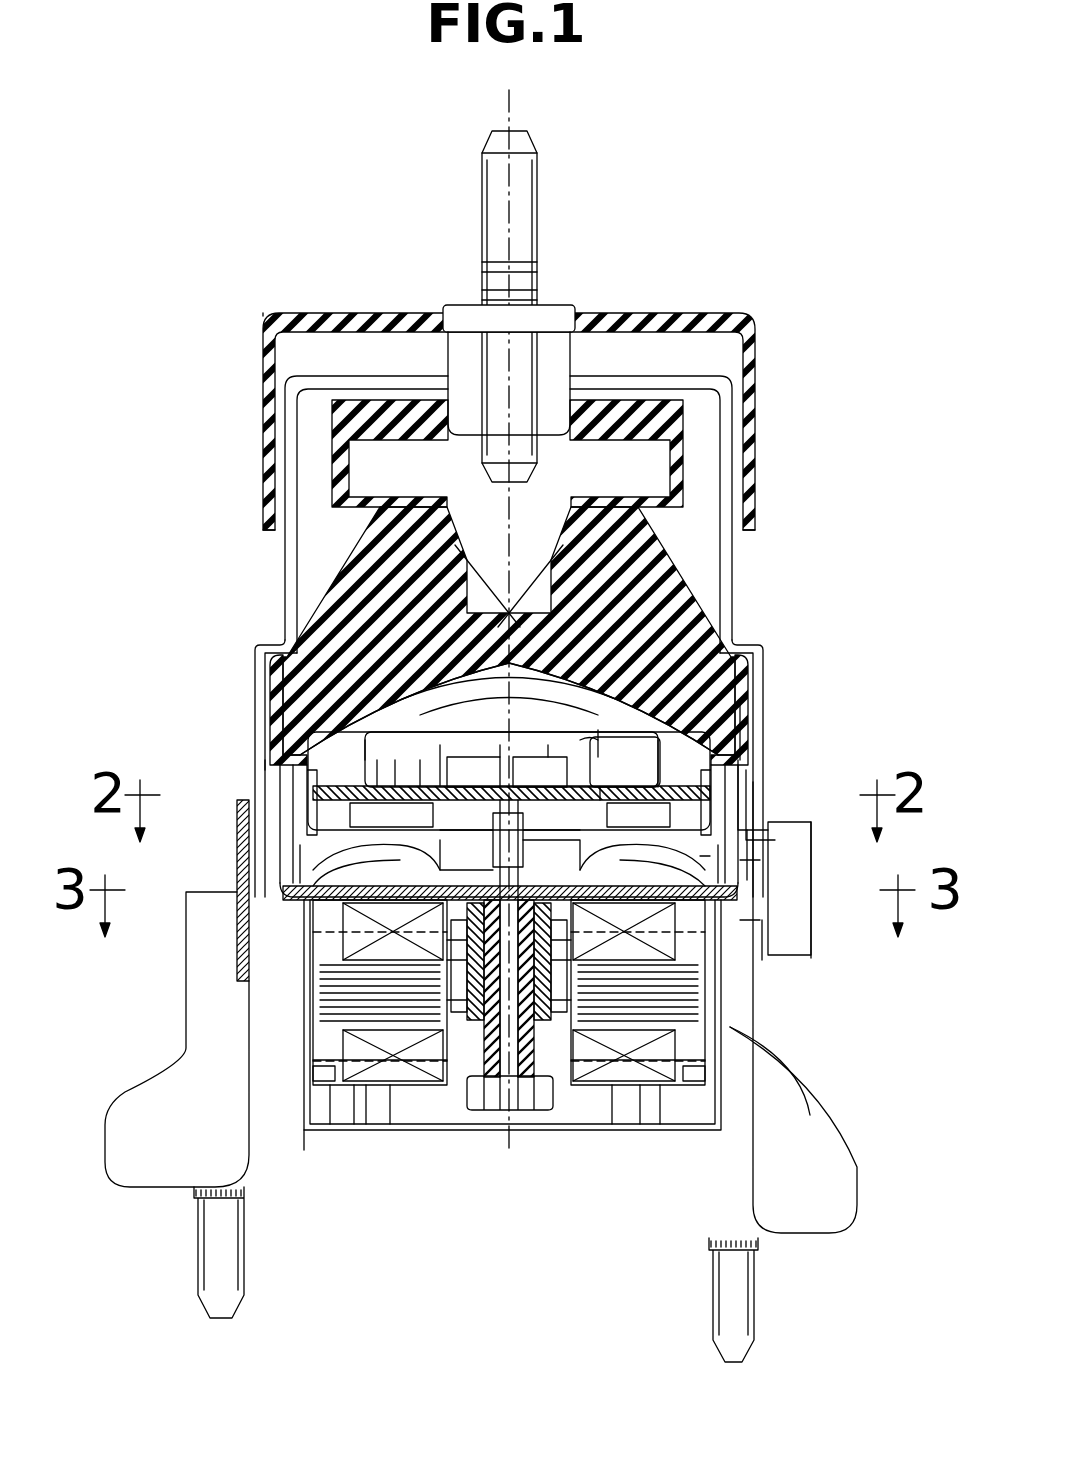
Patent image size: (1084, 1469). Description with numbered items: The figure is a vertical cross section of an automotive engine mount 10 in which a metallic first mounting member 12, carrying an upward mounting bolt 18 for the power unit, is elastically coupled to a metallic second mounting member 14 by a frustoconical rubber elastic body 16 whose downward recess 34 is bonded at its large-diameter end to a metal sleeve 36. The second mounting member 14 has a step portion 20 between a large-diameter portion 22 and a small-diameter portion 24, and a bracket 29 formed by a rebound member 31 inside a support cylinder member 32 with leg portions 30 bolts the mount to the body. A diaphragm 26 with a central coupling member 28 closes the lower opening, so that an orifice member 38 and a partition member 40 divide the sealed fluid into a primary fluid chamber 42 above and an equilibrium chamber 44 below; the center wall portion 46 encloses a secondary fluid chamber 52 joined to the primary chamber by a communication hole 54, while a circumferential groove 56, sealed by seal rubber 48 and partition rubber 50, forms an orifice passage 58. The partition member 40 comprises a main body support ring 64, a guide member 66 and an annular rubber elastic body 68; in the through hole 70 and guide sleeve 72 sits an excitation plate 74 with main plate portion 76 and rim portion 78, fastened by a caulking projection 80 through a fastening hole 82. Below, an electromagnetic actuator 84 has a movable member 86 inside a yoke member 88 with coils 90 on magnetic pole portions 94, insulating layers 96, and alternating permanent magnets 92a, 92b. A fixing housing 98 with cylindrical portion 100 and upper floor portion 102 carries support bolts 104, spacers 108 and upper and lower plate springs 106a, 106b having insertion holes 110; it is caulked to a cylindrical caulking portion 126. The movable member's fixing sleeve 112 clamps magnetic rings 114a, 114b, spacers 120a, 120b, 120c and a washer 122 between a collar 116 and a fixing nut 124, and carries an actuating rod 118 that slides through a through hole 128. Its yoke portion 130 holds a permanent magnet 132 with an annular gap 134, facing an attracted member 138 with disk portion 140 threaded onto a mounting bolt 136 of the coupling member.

The engine mount 10 is at (256, 148).
The first mounting member 12 is at (556, 493).
The second mounting member 14 is at (250, 745).
The rubber elastic body 16 is at (625, 607).
The mounting bolt 18 is at (516, 236).
The step portion 20 is at (293, 770).
The large-diameter portion 22 is at (268, 722).
The small-diameter portion 24 is at (295, 822).
The diaphragm 26 is at (300, 860).
The coupling member 28 is at (511, 809).
The bracket 29 is at (172, 764).
The leg portions 30 is at (170, 1178).
The rebound member 31 is at (285, 600).
The support cylinder member 32 is at (240, 918).
The recess 34 is at (700, 515).
The metal sleeve 36 is at (272, 684).
The orifice member 38 is at (557, 720).
The partition member 40 is at (420, 760).
The primary fluid chamber 42 is at (690, 625).
The equilibrium chamber 44 is at (660, 790).
The center wall portion 46 is at (366, 748).
The seal rubber 48 is at (738, 740).
The partition rubber 50 is at (310, 805).
The secondary fluid chamber 52 is at (378, 774).
The communication hole 54 is at (590, 740).
The circumferential groove 56 is at (724, 792).
The orifice passage 58 is at (740, 802).
The main body support ring 64 is at (320, 845).
The guide member 66 is at (615, 770).
The annular rubber elastic body 68 is at (396, 758).
The through hole 70 is at (466, 745).
The guide sleeve 72 is at (600, 760).
The excitation plate 74 is at (482, 740).
The main plate portion 76 is at (548, 757).
The rim portion 78 is at (440, 760).
The caulking projection 80 is at (528, 735).
The fastening hole 82 is at (500, 757).
The electromagnetic actuator 84 is at (738, 1132).
The movable member 86 is at (376, 865).
The yoke member 88 is at (740, 1038).
The coil 90 is at (366, 1088).
The permanent magnet 92a is at (345, 980).
The permanent magnet 92b is at (345, 966).
The magnetic pole portions 94 is at (340, 934).
The electrical insulating layer 96 is at (331, 1090).
The fixing housing 98 is at (300, 1158).
The cylindrical portion 100 is at (335, 1058).
The upper floor portion 102 is at (677, 857).
The support bolts 104 is at (325, 1076).
The upper plate spring 106a is at (770, 830).
The lower plate spring 106b is at (391, 1125).
The spacers 108 is at (742, 870).
The insertion holes 110 is at (300, 897).
The fixing sleeve 112 is at (514, 1132).
The upper magnetic ring 114a is at (470, 1095).
The lower magnetic ring 114b is at (453, 1082).
The collar 116 is at (427, 856).
The actuating rod 118 is at (507, 840).
The upper spacer 120a is at (725, 915).
The middle spacer 120b is at (556, 1090).
The lower spacer 120c is at (541, 1100).
The washer 122 is at (492, 1082).
The fixing nut 124 is at (502, 1115).
The cylindrical caulking portion 126 is at (757, 880).
The through hole 128 is at (642, 865).
The yoke portion 130 is at (612, 826).
The permanent magnet 132 is at (473, 772).
The annular gap 134 is at (391, 818).
The mounting bolt 136 is at (540, 772).
The attracted member 138 is at (551, 855).
The disk portion 140 is at (625, 762).